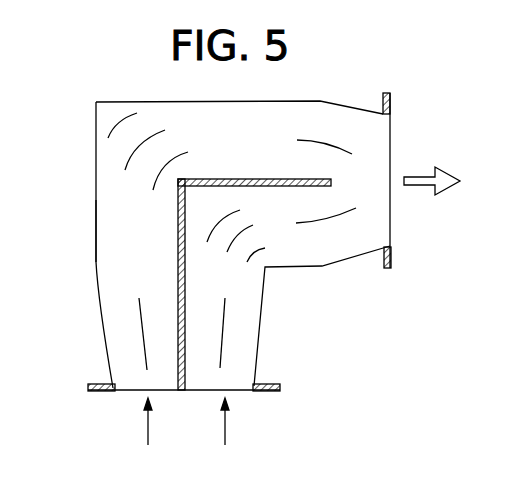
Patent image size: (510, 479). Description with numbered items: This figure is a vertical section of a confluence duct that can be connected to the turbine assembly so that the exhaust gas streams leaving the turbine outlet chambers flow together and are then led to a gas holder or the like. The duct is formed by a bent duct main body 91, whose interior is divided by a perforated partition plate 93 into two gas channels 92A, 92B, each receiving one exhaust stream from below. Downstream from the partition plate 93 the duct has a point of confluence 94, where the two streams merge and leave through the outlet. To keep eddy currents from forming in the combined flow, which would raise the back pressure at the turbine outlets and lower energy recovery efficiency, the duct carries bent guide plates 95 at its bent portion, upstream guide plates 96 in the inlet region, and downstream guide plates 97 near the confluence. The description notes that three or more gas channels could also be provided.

The bent duct main body 91 is at (96, 262).
The gas channel 92A is at (119, 220).
The gas channel 92B is at (230, 282).
The perforated partition plate 93 is at (187, 297).
The point of confluence 94 is at (367, 182).
The bent guide plates 95 is at (157, 175).
The upstream guide plates 96 is at (142, 338).
The downstream guide plates 97 is at (318, 142).